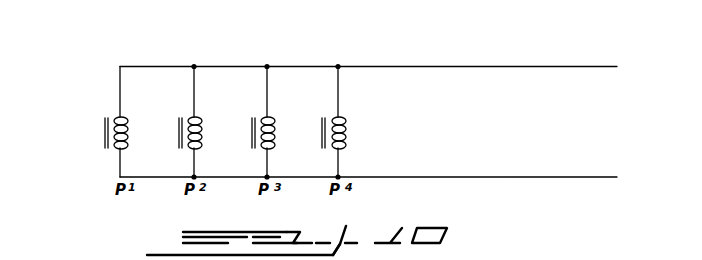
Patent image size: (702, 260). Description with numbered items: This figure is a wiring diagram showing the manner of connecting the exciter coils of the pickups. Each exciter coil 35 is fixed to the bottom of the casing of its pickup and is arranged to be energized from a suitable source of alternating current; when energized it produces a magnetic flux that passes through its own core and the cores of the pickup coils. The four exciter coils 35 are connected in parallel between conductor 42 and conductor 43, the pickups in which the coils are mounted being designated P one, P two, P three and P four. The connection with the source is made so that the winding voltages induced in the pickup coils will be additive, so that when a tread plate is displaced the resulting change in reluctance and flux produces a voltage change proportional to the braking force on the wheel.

The exciter coil 35 is at (106, 128).
The conductor 42 is at (477, 177).
The conductor 43 is at (450, 66).